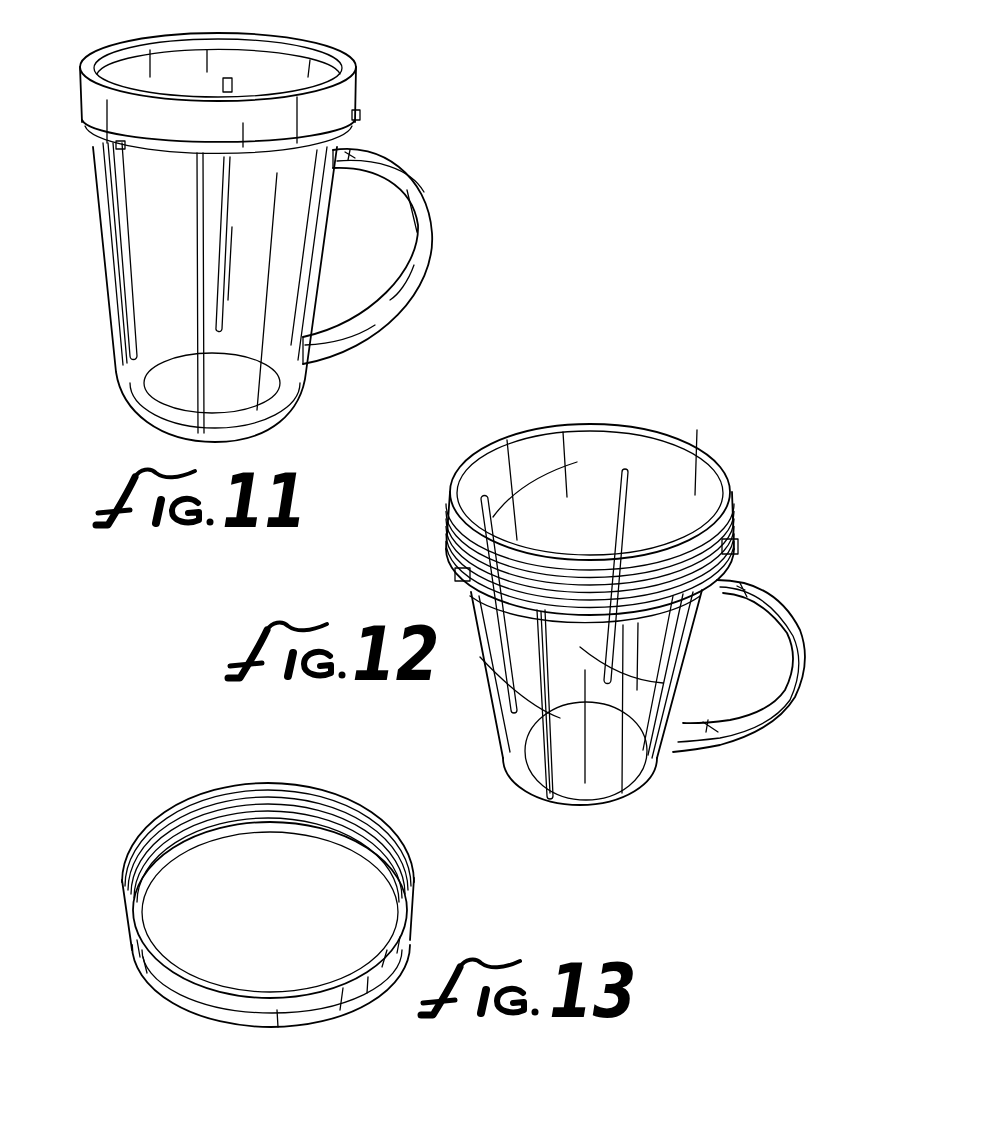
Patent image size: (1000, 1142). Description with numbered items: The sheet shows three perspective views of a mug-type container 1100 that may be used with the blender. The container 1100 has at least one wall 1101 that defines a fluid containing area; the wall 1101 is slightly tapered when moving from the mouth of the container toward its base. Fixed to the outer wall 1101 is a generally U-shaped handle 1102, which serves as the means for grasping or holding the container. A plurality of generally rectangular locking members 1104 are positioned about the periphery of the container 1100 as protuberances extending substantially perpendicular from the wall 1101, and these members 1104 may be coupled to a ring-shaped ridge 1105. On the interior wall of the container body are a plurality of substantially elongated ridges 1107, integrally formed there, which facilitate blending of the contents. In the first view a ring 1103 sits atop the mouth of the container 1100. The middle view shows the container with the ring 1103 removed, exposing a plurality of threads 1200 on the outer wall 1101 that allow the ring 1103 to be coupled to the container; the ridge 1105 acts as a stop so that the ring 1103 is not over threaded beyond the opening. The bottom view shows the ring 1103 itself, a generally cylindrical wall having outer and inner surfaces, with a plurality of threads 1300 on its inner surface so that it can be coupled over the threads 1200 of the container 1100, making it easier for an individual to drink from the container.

In FIG. 11, the mug-type container 1100 is at (385, 62).
In FIG. 12, the mug-type container 1100 is at (745, 488).
In FIG. 11, the wall 1101 is at (150, 338).
In FIG. 12, the wall 1101 is at (514, 727).
In FIG. 11, the handle 1102 is at (430, 203).
In FIG. 12, the handle 1102 is at (742, 730).
In FIG. 11, the ring 1103 is at (352, 82).
In FIG. 13, the ring 1103 is at (306, 1011).
In FIG. 11, the locking members 1104 is at (359, 116).
In FIG. 12, the locking members 1104 is at (748, 540).
In FIG. 11, the ring-shaped ridge 1105 is at (345, 131).
In FIG. 12, the ring-shaped ridge 1105 is at (735, 573).
In FIG. 11, the elongated ridges 1107 is at (182, 239).
In FIG. 12, the elongated ridges 1107 is at (630, 490).
In FIG. 12, the threads 1200 is at (745, 500).
In FIG. 13, the threads 1300 is at (233, 823).